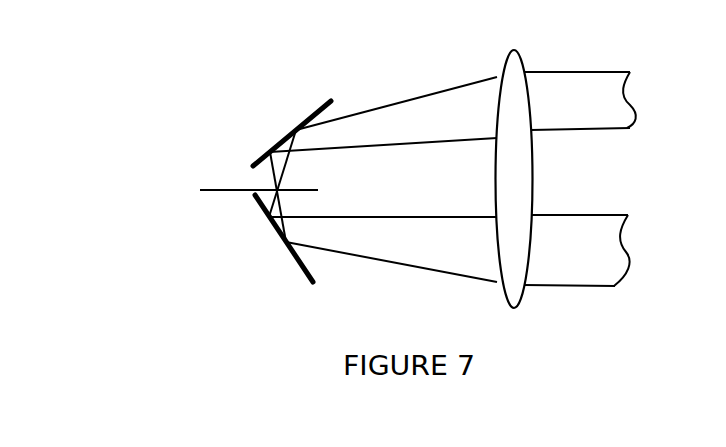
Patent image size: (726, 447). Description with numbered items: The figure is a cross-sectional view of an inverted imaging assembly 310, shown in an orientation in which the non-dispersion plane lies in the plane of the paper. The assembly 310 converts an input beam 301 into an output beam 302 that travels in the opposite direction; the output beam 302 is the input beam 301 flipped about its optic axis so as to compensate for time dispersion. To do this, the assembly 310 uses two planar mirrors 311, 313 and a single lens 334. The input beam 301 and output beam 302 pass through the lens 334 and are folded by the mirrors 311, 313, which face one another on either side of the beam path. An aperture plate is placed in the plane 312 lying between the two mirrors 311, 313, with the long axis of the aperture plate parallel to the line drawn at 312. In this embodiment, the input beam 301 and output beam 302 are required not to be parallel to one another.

The inverted imaging assembly 310 is at (106, 73).
The planar mirror 311 is at (318, 111).
The aperture plate plane 312 is at (206, 191).
The planar mirror 313 is at (301, 264).
The lens 334 is at (531, 177).
The output beam 302 is at (603, 129).
The input beam 301 is at (583, 286).